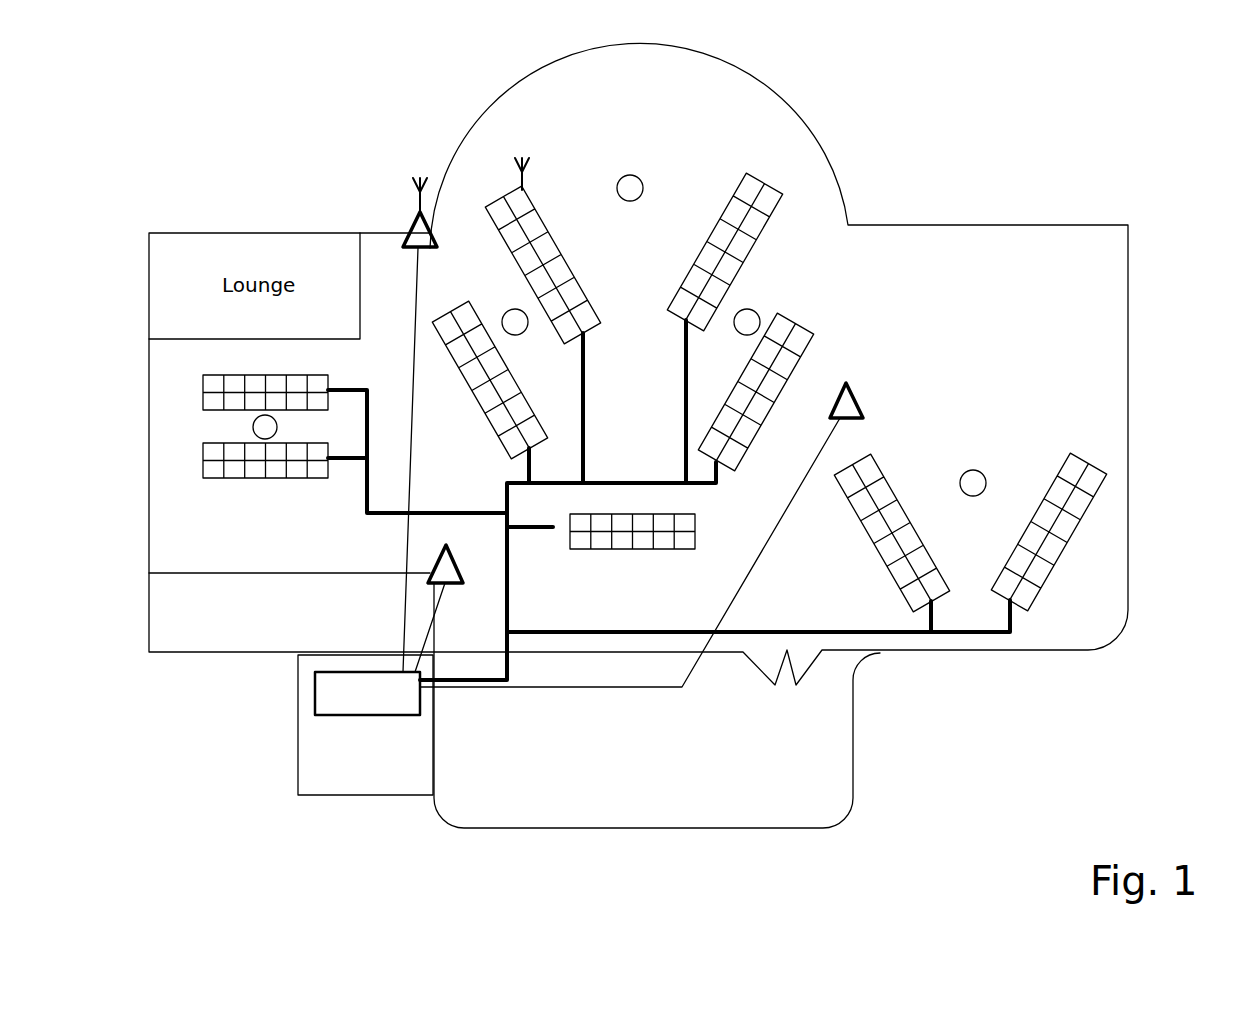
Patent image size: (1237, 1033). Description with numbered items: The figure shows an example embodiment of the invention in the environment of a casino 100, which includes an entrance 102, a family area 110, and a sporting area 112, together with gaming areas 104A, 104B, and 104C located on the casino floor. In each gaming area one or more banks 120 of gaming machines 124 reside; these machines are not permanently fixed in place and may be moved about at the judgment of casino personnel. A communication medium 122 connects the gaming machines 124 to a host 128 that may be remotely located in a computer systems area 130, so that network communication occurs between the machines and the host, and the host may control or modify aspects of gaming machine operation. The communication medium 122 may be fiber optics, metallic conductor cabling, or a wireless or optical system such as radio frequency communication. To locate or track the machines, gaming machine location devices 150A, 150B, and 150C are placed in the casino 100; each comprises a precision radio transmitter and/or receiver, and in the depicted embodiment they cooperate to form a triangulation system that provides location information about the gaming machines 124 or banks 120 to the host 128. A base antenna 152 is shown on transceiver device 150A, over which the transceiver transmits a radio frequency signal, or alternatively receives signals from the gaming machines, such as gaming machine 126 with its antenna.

The casino 100 is at (913, 153).
The entrance 102 is at (768, 74).
The gaming area 104A is at (629, 203).
The gaming area 104B is at (258, 453).
The gaming area 104C is at (973, 501).
The family area 110 is at (296, 614).
The sporting area 112 is at (650, 623).
The bank 120 is at (699, 180).
The communication medium 122 is at (509, 611).
The gaming machine 124 is at (745, 188).
The gaming machine 126 is at (522, 200).
The host 128 is at (314, 695).
The computer systems area 130 is at (361, 796).
The gaming machine location device 150A is at (410, 236).
The gaming machine location device 150B is at (862, 398).
The gaming machine location device 150C is at (460, 586).
The base antenna 152 is at (415, 186).